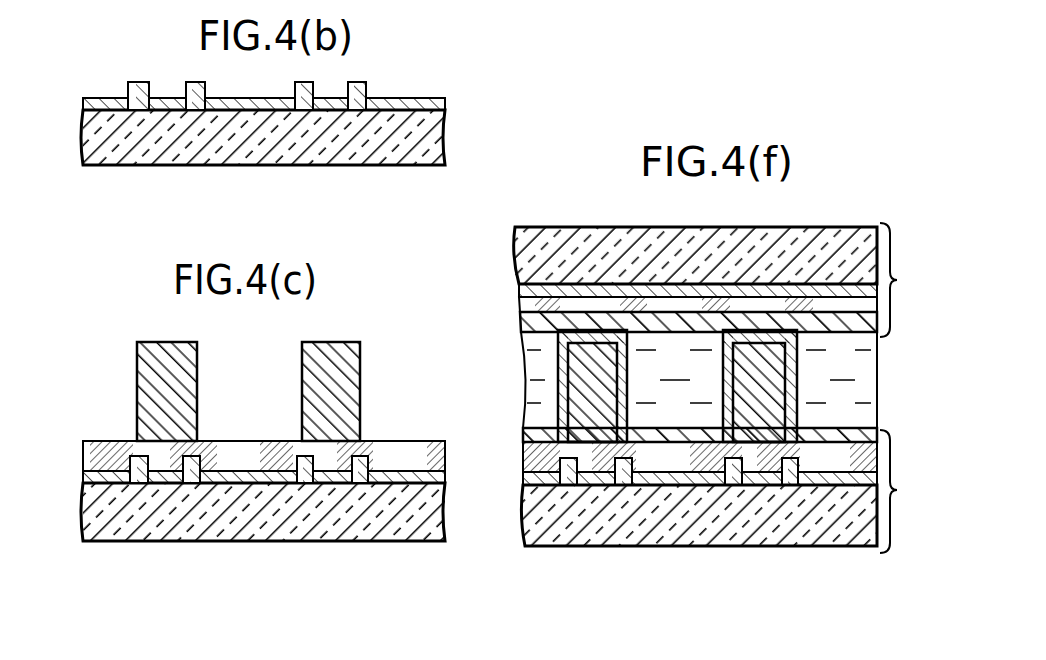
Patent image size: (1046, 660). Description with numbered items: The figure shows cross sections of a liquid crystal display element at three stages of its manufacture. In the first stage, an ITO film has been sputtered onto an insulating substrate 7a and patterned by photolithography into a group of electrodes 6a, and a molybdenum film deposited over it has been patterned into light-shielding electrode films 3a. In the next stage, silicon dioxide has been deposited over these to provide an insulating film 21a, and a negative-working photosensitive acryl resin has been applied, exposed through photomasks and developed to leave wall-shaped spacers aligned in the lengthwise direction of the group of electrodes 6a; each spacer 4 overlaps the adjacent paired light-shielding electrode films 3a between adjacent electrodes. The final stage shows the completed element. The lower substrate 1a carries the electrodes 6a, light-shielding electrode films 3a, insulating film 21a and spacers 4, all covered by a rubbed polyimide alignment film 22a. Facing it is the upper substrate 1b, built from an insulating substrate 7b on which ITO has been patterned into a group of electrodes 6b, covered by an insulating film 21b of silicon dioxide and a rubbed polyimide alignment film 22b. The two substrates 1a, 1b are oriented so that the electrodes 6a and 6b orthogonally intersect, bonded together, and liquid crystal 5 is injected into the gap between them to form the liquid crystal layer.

In FIG. 4F, the substrate 1a is at (901, 491).
In FIG. 4F, the substrate 1b is at (901, 280).
In FIG. 4B, the light-shielding electrode films 3a is at (304, 82).
In FIG. 4C, the light-shielding electrode films 3a is at (355, 487).
In FIG. 4F, the light-shielding electrode films 3a is at (783, 487).
In FIG. 4C, the spacer 4 is at (334, 360).
In FIG. 4F, the spacer 4 is at (676, 392).
In FIG. 4F, the liquid crystal 5 is at (540, 352).
In FIG. 4B, the group of electrodes 6a is at (407, 104).
In FIG. 4C, the group of electrodes 6a is at (417, 478).
In FIG. 4F, the group of electrodes 6a is at (850, 477).
In FIG. 4F, the group of electrodes 6b is at (520, 288).
In FIG. 4B, the insulating substrate 7a is at (370, 150).
In FIG. 4C, the insulating substrate 7a is at (400, 520).
In FIG. 4F, the insulating substrate 7a is at (653, 528).
In FIG. 4F, the insulating substrate 7b is at (560, 240).
In FIG. 4C, the insulating film 21a is at (383, 455).
In FIG. 4F, the insulating film 21a is at (592, 470).
In FIG. 4F, the insulating film 21b is at (520, 304).
In FIG. 4F, the alignment film 22a is at (535, 435).
In FIG. 4F, the alignment film 22b is at (520, 323).